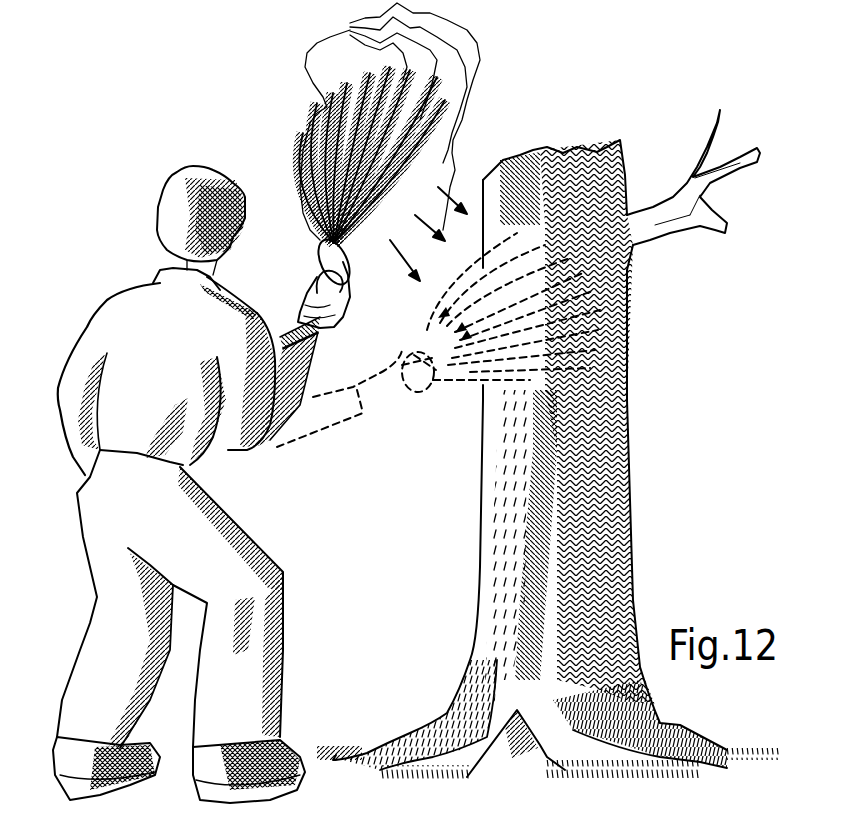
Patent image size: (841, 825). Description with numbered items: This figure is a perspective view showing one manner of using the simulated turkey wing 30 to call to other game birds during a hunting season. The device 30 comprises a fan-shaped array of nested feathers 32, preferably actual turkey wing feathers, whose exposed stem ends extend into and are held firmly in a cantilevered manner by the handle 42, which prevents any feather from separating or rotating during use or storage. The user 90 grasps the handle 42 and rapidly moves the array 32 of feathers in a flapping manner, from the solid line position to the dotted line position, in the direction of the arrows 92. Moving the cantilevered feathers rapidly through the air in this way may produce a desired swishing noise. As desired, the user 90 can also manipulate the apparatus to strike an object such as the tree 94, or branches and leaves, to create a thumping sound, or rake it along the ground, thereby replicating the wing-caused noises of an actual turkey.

The simulated turkey wing 30 is at (283, 108).
The fan-shaped array of nested feathers 32 is at (360, 33).
The handle 42 is at (313, 262).
The user 90 is at (140, 334).
The arrows 92 is at (438, 187).
The tree 94 is at (512, 478).